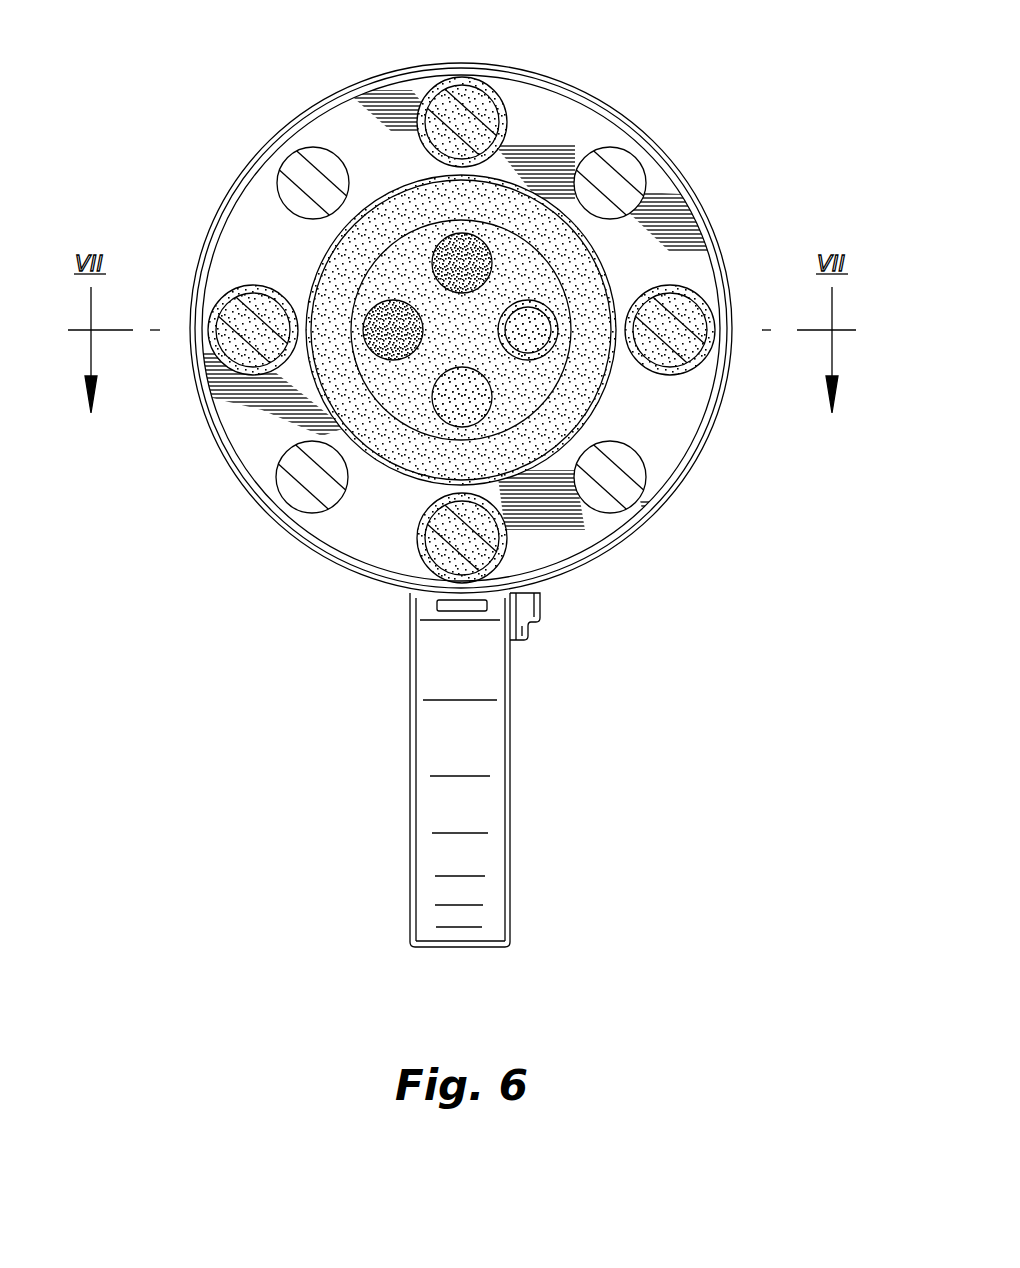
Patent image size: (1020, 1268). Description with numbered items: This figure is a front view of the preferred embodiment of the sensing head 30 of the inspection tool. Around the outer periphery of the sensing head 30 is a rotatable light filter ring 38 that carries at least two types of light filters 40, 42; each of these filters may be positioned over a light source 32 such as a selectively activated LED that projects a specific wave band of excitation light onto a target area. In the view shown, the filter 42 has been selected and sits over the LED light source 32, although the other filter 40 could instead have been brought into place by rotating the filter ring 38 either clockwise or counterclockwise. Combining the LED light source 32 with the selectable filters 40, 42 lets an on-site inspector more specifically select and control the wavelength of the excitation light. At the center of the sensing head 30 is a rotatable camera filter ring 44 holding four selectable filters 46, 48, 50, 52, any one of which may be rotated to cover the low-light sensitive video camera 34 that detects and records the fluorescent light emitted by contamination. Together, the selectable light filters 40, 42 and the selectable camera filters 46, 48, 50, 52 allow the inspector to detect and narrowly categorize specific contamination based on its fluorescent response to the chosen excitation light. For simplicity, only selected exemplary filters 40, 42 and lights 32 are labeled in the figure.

The sensing head 30 is at (160, 38).
The light emitting diode light source 32 is at (222, 310).
The low-light sensitive video camera 34 is at (535, 328).
The rotatable light filter ring 38 is at (385, 112).
The light filter 40 is at (315, 183).
The light filter 42 is at (212, 347).
The rotatable camera filter ring 44 is at (342, 265).
The selectable camera filter 46 is at (445, 410).
The selectable camera filter 48 is at (560, 365).
The selectable camera filter 50 is at (458, 262).
The selectable camera filter 52 is at (370, 305).